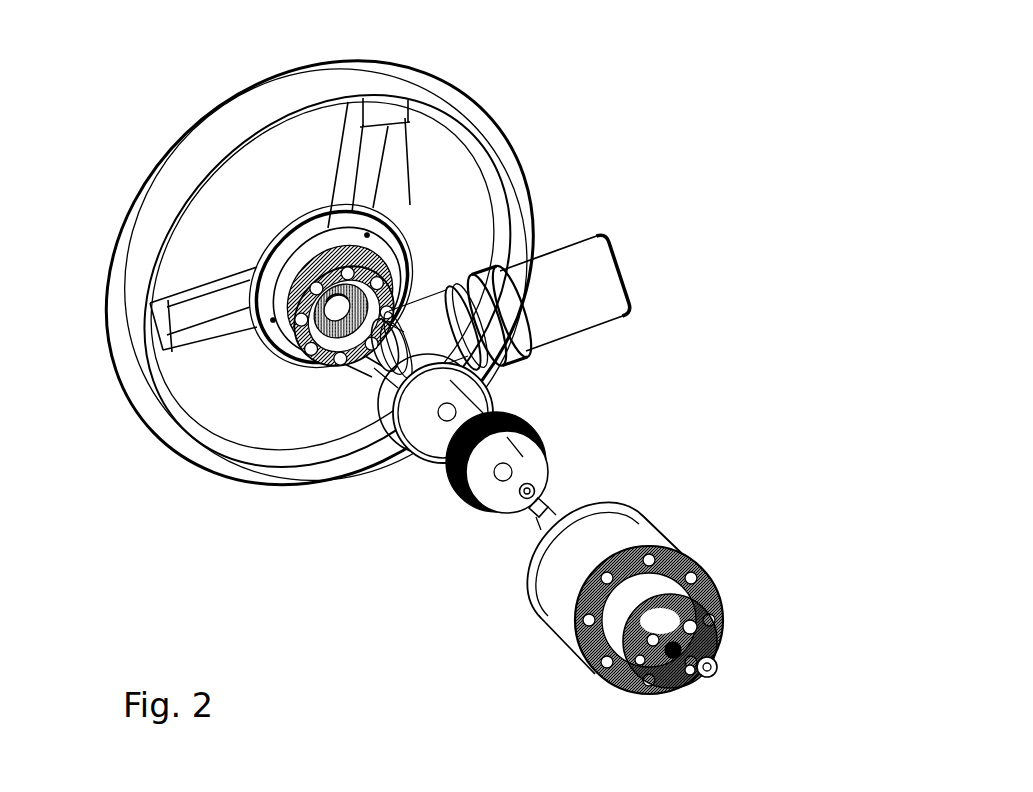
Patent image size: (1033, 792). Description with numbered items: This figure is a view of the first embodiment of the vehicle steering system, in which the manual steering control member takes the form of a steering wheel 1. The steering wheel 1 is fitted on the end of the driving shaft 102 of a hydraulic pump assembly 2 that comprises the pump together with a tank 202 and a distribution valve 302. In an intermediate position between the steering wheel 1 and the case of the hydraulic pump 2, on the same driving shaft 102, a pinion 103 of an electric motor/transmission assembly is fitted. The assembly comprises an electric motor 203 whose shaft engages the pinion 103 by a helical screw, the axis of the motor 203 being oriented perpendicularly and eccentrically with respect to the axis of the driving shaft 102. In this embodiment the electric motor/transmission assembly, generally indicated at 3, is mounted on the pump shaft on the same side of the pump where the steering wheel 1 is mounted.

The steering wheel 1 is at (477, 113).
The hydraulic pump assembly 2 is at (589, 601).
The steering column / shaft assembly 3 is at (550, 341).
The driving shaft 102 is at (535, 515).
The pinion 103 is at (453, 482).
The tank 202 is at (570, 572).
The electric motor 203 is at (567, 313).
The distribution valve 302 is at (623, 630).